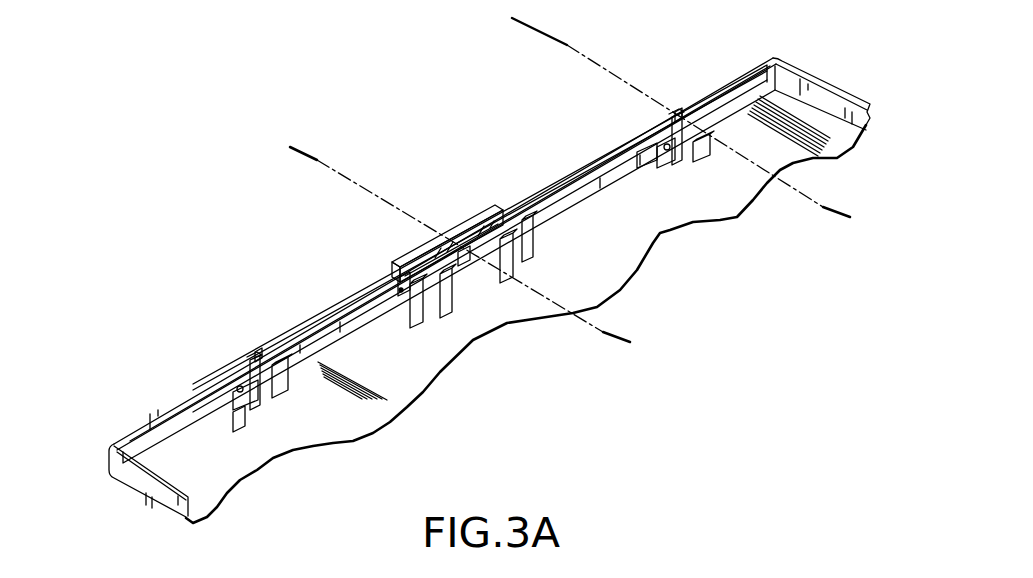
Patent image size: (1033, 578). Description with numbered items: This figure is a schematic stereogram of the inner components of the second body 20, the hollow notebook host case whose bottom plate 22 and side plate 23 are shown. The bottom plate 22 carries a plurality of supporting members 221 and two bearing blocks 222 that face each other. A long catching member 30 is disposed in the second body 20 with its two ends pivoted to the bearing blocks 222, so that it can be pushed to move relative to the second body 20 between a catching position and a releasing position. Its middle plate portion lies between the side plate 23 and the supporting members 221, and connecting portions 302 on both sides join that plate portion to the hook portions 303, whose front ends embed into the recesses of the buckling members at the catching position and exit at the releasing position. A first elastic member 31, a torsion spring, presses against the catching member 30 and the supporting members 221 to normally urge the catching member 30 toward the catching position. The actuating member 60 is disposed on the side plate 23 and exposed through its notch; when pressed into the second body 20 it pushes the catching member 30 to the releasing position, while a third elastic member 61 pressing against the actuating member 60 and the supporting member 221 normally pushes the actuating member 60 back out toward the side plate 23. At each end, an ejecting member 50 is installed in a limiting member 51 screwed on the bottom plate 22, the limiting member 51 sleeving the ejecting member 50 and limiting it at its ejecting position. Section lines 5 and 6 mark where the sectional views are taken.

The second body 20 is at (152, 508).
The bottom plate 22 is at (333, 428).
The side plate 23 is at (167, 413).
The catching member 30 is at (580, 192).
The connecting portions 302 is at (370, 318).
The hook portions 303 is at (266, 352).
The first elastic member 31 is at (430, 243).
The ejecting member 50 is at (252, 352).
The limiting member 51 is at (246, 362).
The actuating member 60 is at (427, 243).
The third elastic member 61 is at (397, 270).
The supporting members 221 is at (450, 292).
The bearing blocks 222 is at (230, 425).
The section line 5- 5 is at (304, 153).
The section line 6- 6 is at (524, 29).